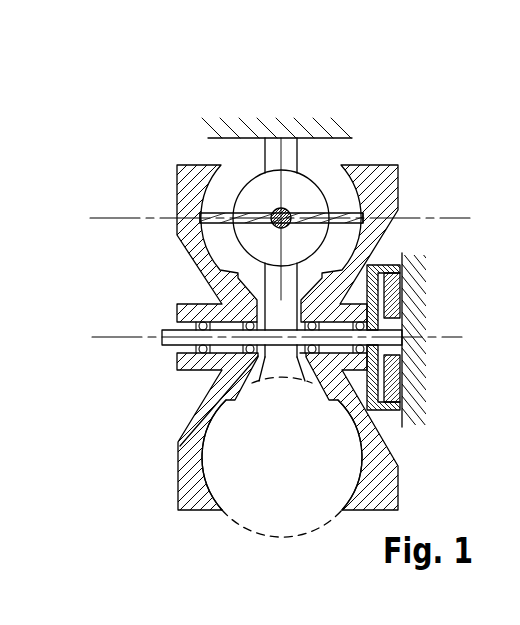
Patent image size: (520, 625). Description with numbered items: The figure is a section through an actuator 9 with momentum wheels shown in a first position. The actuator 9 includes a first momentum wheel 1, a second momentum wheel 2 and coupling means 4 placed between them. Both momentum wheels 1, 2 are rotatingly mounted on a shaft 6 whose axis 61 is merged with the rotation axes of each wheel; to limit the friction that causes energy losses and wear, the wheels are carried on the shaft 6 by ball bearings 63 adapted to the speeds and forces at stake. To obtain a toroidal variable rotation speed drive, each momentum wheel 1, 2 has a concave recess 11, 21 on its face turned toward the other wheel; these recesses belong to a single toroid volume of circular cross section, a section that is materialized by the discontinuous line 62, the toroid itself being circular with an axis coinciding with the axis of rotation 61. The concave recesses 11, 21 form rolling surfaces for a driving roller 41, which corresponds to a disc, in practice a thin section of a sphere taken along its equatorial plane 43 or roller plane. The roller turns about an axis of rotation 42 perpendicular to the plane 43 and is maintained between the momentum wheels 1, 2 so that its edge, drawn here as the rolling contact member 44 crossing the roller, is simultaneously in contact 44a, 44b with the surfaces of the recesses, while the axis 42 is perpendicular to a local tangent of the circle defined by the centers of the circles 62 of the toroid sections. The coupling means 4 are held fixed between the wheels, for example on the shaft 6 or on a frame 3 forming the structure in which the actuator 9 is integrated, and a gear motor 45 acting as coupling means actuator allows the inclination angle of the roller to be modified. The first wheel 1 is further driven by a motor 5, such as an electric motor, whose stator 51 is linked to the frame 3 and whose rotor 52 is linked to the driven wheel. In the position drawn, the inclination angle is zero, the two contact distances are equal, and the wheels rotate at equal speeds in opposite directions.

The first momentum wheel 1 is at (383, 482).
The second momentum wheel 2 is at (187, 478).
The frame 3 is at (280, 127).
The coupling means 4 is at (317, 164).
The motor 5 is at (425, 291).
The shaft 6 is at (168, 330).
The actuator 9 is at (384, 106).
The concave recess 11 is at (322, 493).
The concave recess 21 is at (240, 490).
The driving roller 41 is at (212, 240).
The axis of rotation 42 is at (272, 183).
The equatorial plane 43 is at (118, 218).
The pin 44 is at (282, 206).
The contact 44a is at (388, 222).
The contact 44b is at (200, 213).
The gear motor 45 is at (332, 203).
The stator 51 is at (392, 303).
The rotor 52 is at (375, 390).
The axis 61 is at (110, 337).
The discontinuous line 62 is at (306, 537).
The ball bearings 63 is at (185, 346).